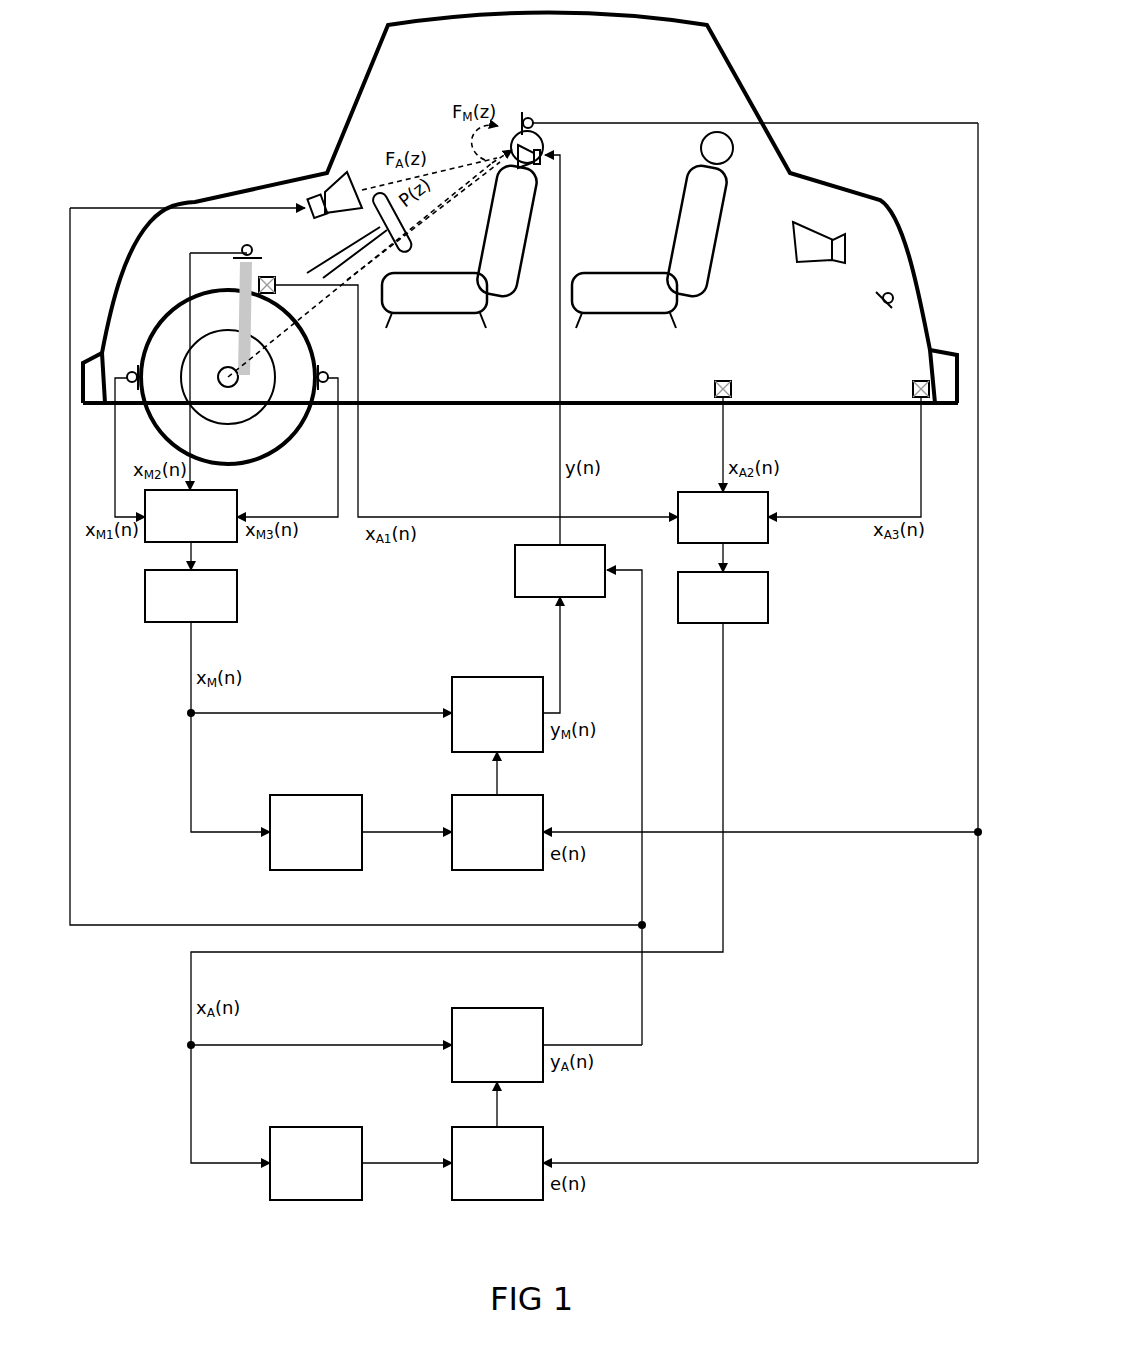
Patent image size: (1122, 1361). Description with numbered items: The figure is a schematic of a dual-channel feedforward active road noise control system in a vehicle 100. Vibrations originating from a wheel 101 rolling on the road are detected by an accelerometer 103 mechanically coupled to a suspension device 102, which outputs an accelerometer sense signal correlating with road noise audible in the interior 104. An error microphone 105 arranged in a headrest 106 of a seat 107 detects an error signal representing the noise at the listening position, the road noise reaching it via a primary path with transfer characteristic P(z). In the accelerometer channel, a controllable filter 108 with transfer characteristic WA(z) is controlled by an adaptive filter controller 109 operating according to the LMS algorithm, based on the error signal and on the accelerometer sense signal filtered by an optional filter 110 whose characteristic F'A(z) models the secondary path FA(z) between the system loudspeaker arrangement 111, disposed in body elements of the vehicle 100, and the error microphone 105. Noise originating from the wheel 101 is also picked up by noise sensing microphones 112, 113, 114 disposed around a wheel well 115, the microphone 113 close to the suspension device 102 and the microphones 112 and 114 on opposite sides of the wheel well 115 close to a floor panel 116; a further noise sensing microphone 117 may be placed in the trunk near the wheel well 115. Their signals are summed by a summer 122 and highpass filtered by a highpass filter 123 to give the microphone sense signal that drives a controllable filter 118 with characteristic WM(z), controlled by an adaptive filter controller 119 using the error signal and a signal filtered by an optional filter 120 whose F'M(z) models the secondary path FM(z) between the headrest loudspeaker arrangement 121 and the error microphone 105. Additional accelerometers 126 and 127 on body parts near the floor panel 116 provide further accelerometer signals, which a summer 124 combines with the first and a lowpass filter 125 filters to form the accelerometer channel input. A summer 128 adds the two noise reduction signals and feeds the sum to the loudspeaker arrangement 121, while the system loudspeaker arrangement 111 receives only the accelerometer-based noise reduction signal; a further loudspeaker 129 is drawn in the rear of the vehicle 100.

The vehicle 100 is at (745, 85).
The wheel 101 is at (298, 343).
The suspension device 102 is at (237, 292).
The accelerometer 103 is at (280, 282).
The interior 104 is at (652, 230).
The error microphone 105 is at (532, 118).
The headrest 106 is at (542, 160).
The seat 107 is at (505, 296).
The controllable filter 108 is at (470, 1008).
The adaptive filter controller 109 is at (543, 1133).
The optional filter 110 is at (362, 1133).
The system loudspeaker arrangement 111 is at (357, 178).
The noise sensing microphone 112 is at (132, 371).
The noise sensing microphone 113 is at (247, 244).
The noise sensing microphone 114 is at (323, 385).
The wheel well 115 is at (163, 305).
The floor panel 116 is at (130, 410).
The noise sensing microphone 117 is at (888, 292).
The controllable filter 118 is at (470, 677).
The adaptive filter controller 119 is at (543, 802).
The optional filter 120 is at (362, 802).
The loudspeaker arrangement 121 is at (556, 180).
The summer 122 is at (235, 542).
The highpass filter 123 is at (235, 622).
The summer 124 is at (766, 543).
The lowpass filter 125 is at (766, 623).
The accelerometer 126 is at (723, 380).
The accelerometer 127 is at (927, 405).
The summer 128 is at (516, 597).
The rear loudspeaker 129 is at (825, 232).